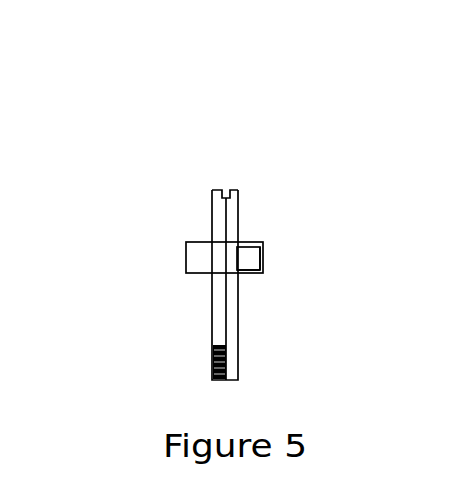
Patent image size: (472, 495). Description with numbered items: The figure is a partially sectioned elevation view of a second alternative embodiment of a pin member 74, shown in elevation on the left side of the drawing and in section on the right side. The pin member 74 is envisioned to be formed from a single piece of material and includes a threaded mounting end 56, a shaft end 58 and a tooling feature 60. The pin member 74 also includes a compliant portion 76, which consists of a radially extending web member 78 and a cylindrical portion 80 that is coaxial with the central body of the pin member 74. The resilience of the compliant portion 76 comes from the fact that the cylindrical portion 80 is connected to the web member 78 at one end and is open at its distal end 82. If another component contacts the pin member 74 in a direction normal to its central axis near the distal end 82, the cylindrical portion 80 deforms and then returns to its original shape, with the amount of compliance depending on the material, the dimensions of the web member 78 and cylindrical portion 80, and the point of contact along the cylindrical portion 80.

The threaded mounting end 56 is at (238, 357).
The shaft end 58 is at (227, 205).
The tooling feature 60 is at (222, 188).
The pin member 74 is at (166, 191).
The compliant portion 76 is at (187, 258).
The web member 78 is at (250, 242).
The cylindrical portion 80 is at (263, 258).
The distal end 82 is at (263, 270).